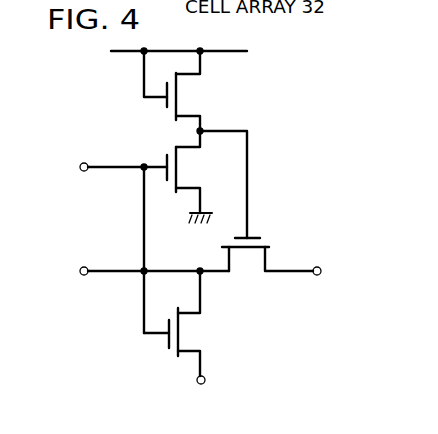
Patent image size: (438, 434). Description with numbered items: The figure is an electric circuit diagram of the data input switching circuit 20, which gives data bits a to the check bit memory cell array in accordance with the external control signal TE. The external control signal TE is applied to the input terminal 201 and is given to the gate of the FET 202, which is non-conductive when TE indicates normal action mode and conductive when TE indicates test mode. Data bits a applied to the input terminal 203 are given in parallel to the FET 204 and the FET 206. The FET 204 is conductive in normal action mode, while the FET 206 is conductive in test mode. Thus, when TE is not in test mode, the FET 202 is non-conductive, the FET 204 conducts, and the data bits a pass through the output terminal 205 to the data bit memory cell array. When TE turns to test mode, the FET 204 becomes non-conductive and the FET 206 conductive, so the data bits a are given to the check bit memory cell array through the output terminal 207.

The data input switching circuit 20 is at (261, 67).
The input terminal 201 is at (84, 160).
The FET 202 is at (183, 171).
The input terminal 203 is at (84, 262).
The FET 204 is at (256, 232).
The output terminal 205 is at (320, 267).
The FET 206 is at (166, 338).
The output terminal 207 is at (207, 378).